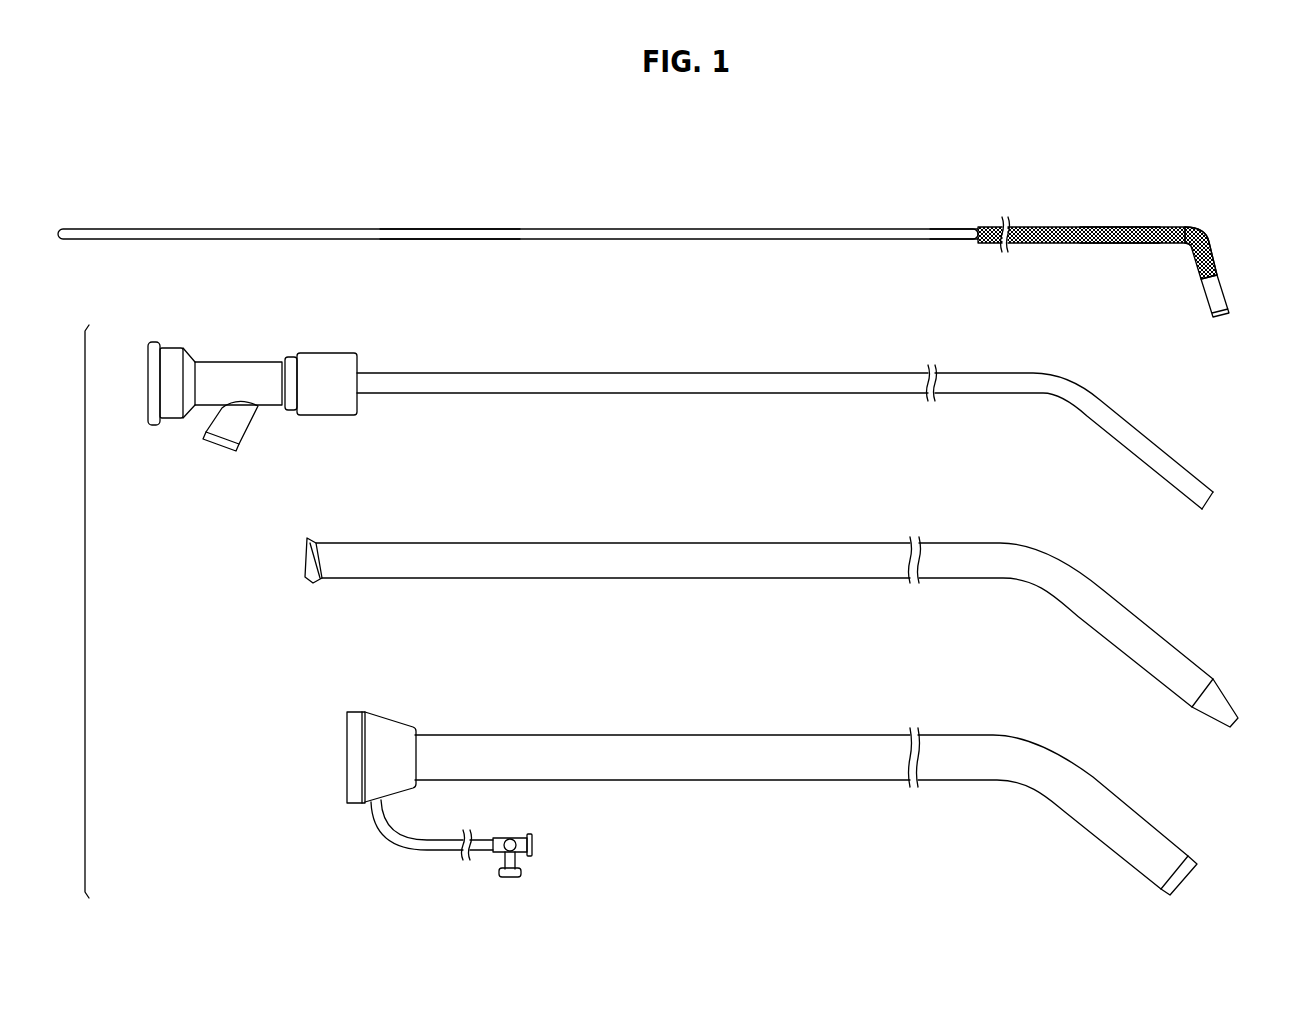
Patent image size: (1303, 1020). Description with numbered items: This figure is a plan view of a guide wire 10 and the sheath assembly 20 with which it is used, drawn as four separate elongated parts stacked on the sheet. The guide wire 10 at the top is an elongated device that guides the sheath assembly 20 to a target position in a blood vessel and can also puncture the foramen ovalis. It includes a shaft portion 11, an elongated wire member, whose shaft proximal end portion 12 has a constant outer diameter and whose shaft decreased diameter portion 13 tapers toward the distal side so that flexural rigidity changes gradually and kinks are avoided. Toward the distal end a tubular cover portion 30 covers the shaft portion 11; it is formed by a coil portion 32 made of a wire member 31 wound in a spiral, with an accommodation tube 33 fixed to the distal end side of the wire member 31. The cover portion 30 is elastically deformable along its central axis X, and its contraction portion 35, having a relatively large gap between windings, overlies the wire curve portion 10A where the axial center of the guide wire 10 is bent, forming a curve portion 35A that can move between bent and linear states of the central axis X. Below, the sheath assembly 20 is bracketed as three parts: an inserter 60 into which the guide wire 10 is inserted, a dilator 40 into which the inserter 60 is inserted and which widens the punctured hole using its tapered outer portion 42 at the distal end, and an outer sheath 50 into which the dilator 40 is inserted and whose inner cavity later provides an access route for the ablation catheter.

The guide wire 10 is at (188, 215).
The wire curve portion 10A is at (1193, 232).
The shaft portion 11 is at (320, 228).
The shaft proximal end portion 12 is at (440, 229).
The shaft decreased diameter portion 13 is at (1033, 227).
The central axis X is at (950, 229).
The cover portion 30 is at (1137, 227).
The wire member 31 is at (1117, 246).
The coil portion 32 is at (1029, 246).
The accommodation tube 33 is at (1222, 290).
The contraction portion 35 is at (1185, 227).
The curve portion 35A is at (1210, 236).
The sheath assembly 20 is at (85, 593).
The inserter 60 is at (406, 355).
The dilator 40 is at (377, 528).
The tapered outer portion 42 is at (1226, 700).
The outer sheath 50 is at (437, 721).